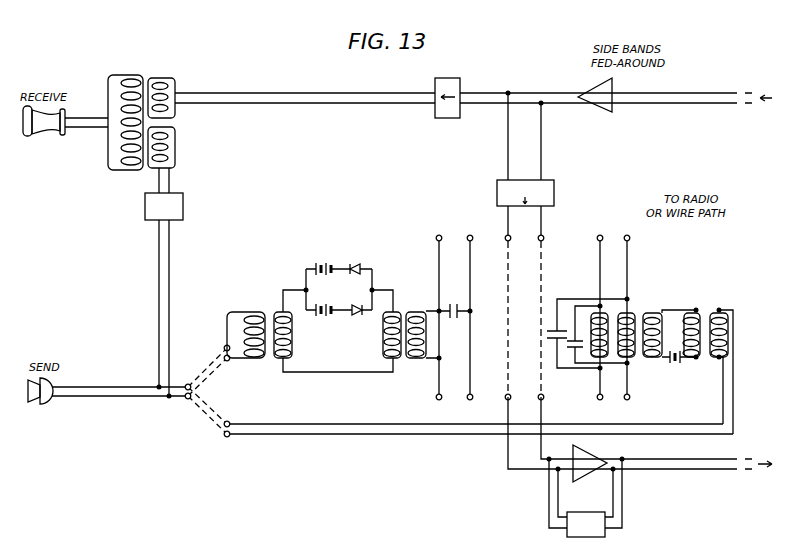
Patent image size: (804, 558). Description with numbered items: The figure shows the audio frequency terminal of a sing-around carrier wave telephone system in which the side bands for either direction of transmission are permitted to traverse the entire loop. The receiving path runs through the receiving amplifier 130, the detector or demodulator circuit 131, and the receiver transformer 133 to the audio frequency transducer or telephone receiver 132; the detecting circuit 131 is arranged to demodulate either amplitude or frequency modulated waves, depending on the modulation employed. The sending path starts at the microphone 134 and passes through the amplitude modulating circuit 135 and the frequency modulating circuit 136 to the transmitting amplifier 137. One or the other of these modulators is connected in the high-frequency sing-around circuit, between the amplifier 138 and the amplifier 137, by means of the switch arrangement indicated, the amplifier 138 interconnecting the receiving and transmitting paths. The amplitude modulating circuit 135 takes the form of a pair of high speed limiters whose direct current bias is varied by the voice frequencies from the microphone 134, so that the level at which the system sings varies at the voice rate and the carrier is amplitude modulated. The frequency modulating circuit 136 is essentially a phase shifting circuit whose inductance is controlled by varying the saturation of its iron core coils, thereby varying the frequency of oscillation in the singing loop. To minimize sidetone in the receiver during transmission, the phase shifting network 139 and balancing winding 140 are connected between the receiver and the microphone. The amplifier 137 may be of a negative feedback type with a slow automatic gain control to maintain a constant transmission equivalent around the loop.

The receiving amplifier 130 is at (610, 110).
The detector or demodulator circuit 131 is at (457, 83).
The telephone receiver 132 is at (47, 128).
The receiver transformer 133 is at (147, 80).
The microphone 134 is at (47, 399).
The amplitude modulating circuit 135 is at (326, 364).
The frequency modulating circuit 136 is at (677, 310).
The transmitting amplifier 137 is at (583, 472).
The amplifier 138 is at (556, 196).
The phase shifting network 139 is at (183, 208).
The balancing winding 140 is at (170, 150).